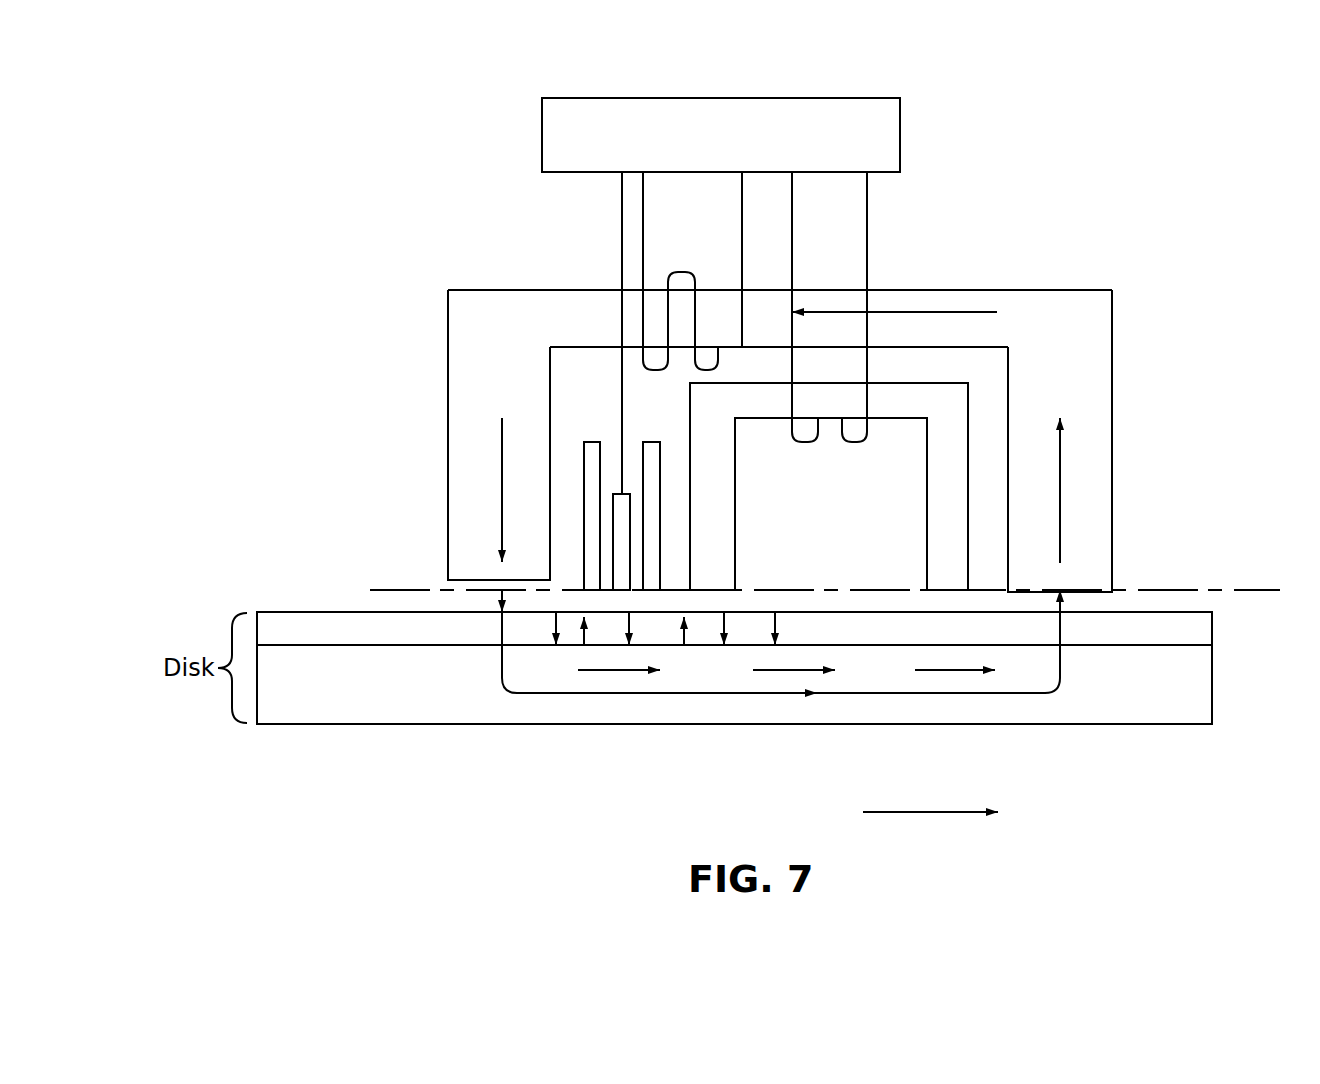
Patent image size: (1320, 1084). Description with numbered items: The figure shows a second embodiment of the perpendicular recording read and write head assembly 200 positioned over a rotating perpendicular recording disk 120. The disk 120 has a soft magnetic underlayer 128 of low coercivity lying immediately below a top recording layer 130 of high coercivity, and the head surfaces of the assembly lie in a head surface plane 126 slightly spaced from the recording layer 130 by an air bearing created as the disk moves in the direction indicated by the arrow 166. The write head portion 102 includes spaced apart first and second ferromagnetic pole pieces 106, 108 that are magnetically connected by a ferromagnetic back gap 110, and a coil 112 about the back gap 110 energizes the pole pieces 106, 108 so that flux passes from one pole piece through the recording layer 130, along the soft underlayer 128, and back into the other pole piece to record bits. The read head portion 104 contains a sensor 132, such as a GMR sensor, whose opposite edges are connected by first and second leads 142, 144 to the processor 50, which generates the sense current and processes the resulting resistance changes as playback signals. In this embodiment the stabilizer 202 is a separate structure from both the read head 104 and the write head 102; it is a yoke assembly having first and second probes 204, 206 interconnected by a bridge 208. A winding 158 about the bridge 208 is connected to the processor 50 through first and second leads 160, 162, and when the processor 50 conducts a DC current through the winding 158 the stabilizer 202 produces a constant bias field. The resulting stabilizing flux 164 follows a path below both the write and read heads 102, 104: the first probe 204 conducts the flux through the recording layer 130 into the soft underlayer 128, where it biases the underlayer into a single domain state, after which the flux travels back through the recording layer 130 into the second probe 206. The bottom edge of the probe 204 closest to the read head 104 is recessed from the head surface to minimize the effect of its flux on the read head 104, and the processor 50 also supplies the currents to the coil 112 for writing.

The processor 50 is at (828, 148).
The read and write head assembly 200 is at (1057, 167).
The stabilizer 202 is at (950, 290).
The first probe 204 is at (483, 367).
The second probe 206 is at (1077, 392).
The bridge 208 is at (727, 322).
The write head portion 102 is at (867, 377).
The read head portion 104 is at (633, 445).
The first ferromagnetic pole piece 106 is at (715, 493).
The second ferromagnetic pole piece 108 is at (955, 540).
The ferromagnetic back gap 110 is at (947, 400).
The coil 112 is at (802, 447).
The rotating perpendicular recording disk 120 is at (832, 612).
The head surface plane 126 is at (1230, 592).
The soft magnetic underlayer 128 is at (738, 705).
The top recording layer 130 is at (890, 630).
The sensor 132 is at (620, 520).
The first lead 142 is at (457, 444).
The second lead 144 is at (622, 395).
The winding 158 is at (643, 320).
The first lead 160 is at (643, 247).
The second lead 162 is at (742, 195).
The stabilizing flux 164 is at (628, 693).
The arrow 166 is at (898, 812).